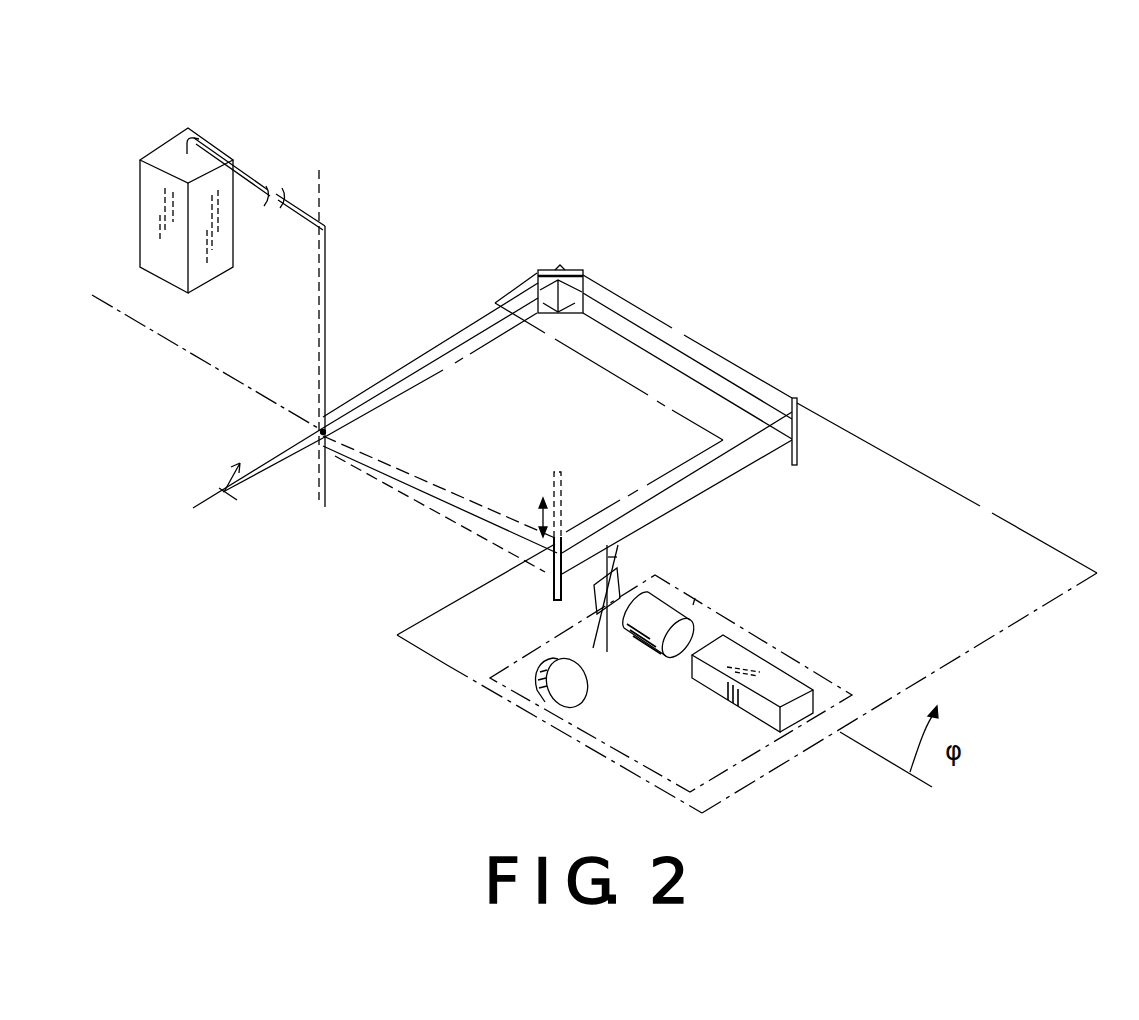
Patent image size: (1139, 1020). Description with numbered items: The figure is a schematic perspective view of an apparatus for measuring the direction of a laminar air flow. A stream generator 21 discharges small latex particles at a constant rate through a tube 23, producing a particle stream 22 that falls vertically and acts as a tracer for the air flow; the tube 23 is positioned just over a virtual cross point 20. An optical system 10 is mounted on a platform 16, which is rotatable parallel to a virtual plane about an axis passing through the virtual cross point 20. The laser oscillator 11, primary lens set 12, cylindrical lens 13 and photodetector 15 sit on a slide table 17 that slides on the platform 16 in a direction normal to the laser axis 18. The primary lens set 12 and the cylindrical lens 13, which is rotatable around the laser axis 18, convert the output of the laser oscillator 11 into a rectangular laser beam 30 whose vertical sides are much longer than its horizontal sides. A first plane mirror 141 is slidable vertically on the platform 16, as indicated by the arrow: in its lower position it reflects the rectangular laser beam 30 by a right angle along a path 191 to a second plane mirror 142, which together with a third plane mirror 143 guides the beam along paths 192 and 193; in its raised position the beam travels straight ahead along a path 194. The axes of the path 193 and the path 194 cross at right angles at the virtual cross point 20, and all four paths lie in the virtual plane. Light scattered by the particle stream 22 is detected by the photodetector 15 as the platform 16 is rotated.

The optical system 10 is at (535, 184).
The laser oscillator 11 is at (767, 678).
The primary lens set 12 is at (656, 612).
The cylindrical lens 13 is at (618, 568).
The photodetector 15 is at (533, 682).
The platform 16 is at (980, 527).
The slide table 17 is at (740, 748).
The laser axis 18 is at (693, 604).
The virtual cross point 20 is at (313, 428).
The stream generator 21 is at (152, 230).
The particle stream 22 is at (320, 338).
The tube 23 is at (248, 177).
The rectangular laser beam 30 is at (262, 482).
The first plane mirror 141 is at (545, 598).
The second plane mirror 142 is at (797, 425).
The third plane mirror 143 is at (575, 268).
The path 191 is at (722, 478).
The path 192 is at (667, 323).
The path 193 is at (390, 376).
The path 194 is at (443, 485).